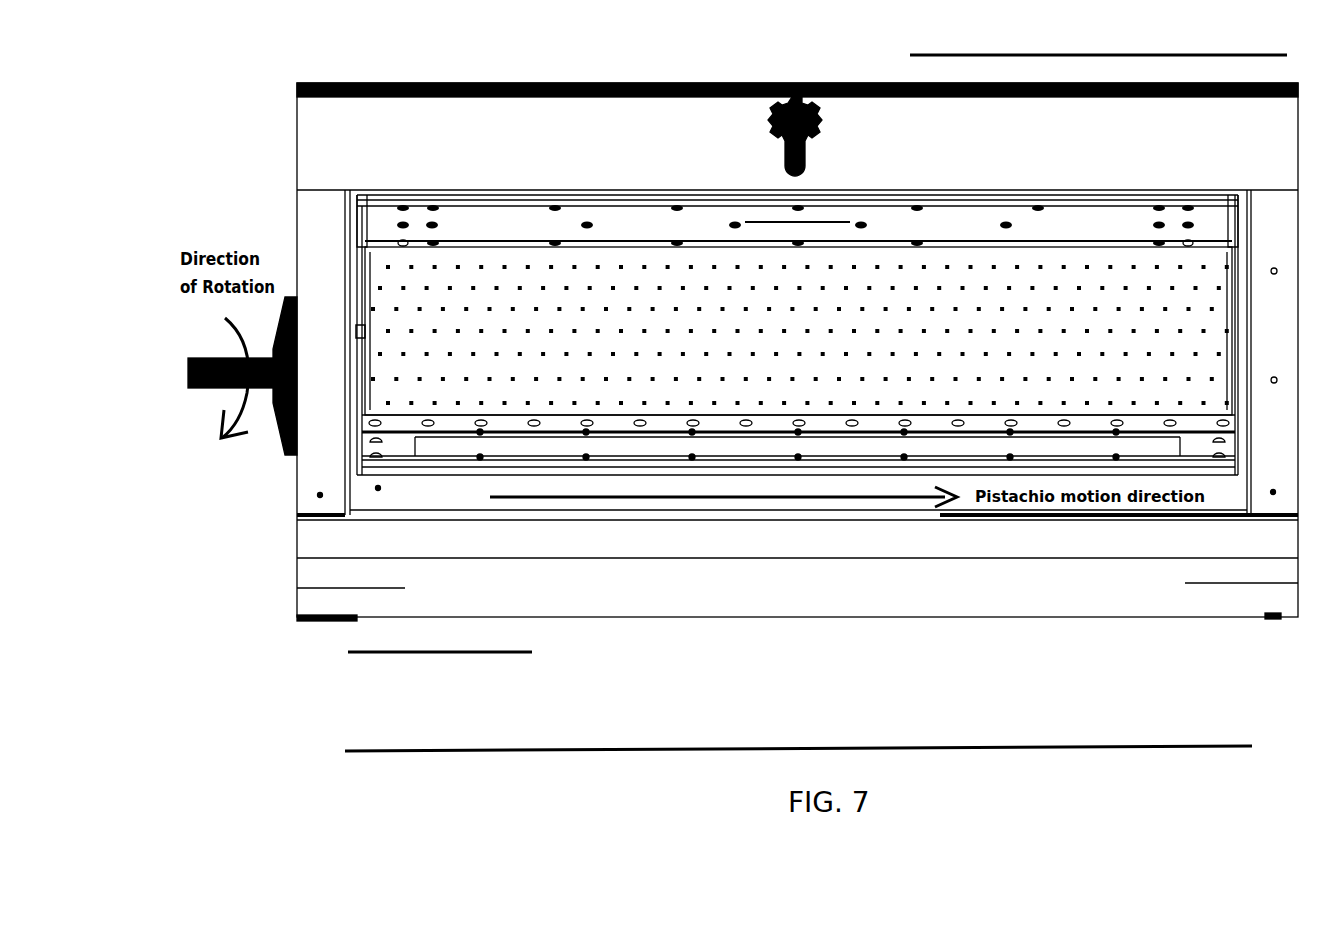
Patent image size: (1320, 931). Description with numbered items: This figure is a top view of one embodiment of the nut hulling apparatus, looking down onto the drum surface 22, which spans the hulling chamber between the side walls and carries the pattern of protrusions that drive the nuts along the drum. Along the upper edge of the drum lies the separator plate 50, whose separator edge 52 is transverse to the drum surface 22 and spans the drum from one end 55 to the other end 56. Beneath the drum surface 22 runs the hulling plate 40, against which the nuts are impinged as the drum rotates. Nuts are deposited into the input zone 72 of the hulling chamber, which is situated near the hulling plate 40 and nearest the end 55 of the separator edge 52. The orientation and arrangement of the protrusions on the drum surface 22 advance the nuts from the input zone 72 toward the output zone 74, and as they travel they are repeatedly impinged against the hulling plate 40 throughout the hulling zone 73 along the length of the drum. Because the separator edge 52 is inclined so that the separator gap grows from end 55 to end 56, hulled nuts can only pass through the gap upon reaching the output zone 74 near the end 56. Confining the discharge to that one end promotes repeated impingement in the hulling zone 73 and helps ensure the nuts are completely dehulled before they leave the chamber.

The drum surface 22 is at (762, 334).
The hulling plate 40 is at (450, 416).
The separator plate 50 is at (620, 205).
The separator edge 52 is at (661, 241).
The end of separator edge 55 is at (370, 245).
The end of separator edge 56 is at (1218, 240).
The input zone 72 is at (440, 668).
The hulling zone 73 is at (798, 763).
The output zone 74 is at (1098, 40).